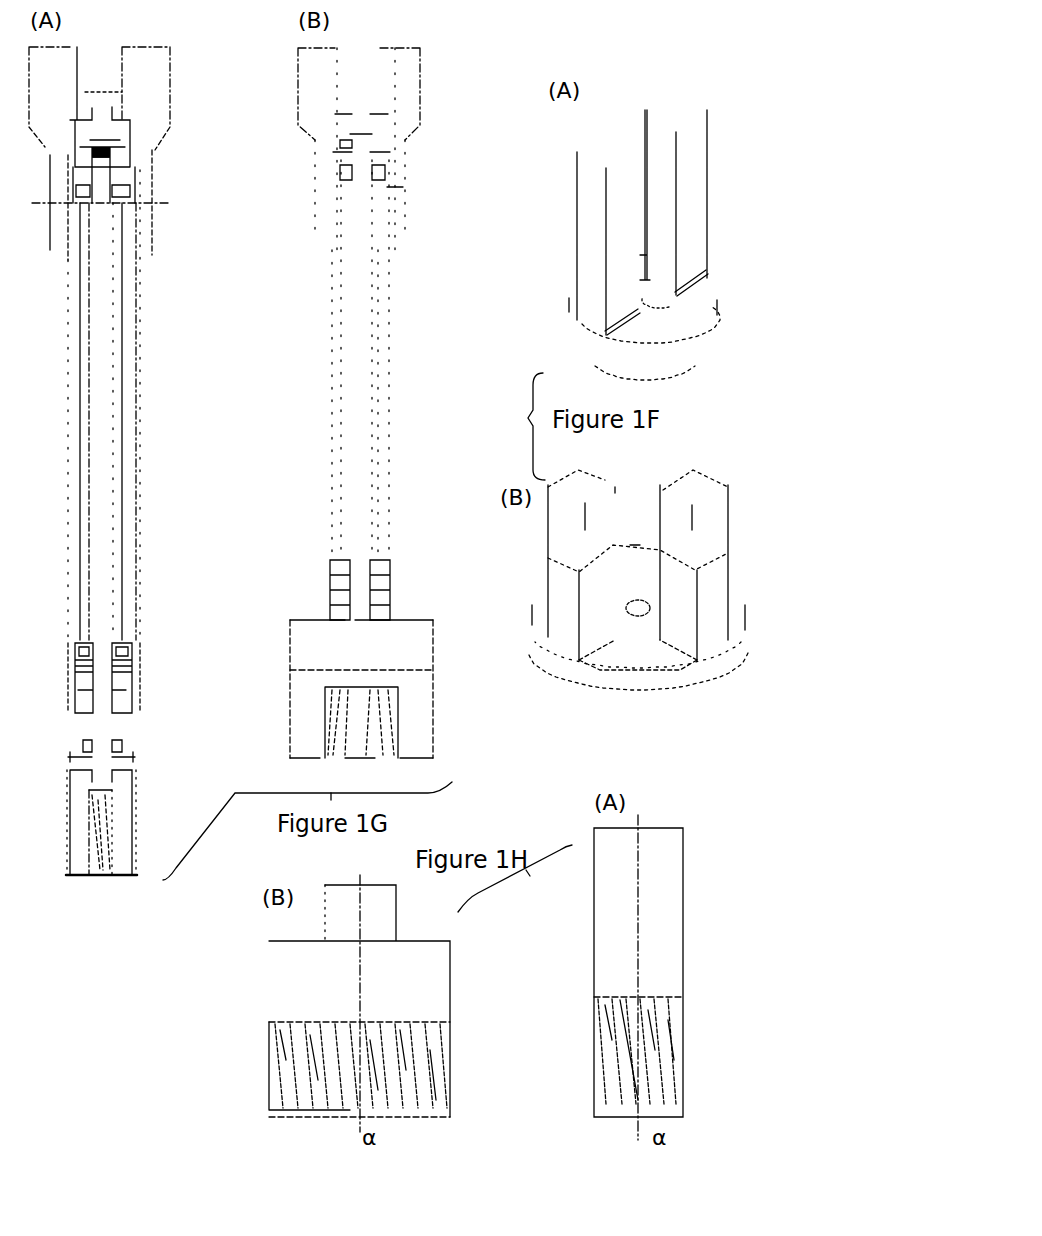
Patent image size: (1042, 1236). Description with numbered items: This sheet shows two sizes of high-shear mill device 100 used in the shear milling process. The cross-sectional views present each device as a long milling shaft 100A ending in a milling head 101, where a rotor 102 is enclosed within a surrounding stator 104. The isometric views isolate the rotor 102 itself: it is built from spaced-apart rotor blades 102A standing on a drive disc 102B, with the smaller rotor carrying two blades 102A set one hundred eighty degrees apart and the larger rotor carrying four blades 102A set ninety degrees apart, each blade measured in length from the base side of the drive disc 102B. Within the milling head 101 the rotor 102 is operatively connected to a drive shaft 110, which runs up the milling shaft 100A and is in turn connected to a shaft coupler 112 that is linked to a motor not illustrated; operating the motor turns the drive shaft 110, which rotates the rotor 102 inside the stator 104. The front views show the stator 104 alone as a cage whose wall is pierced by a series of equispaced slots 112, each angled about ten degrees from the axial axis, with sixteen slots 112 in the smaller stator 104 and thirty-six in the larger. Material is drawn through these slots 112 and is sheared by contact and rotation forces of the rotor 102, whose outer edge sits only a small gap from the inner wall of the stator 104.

In FIG. 1G, the high-shear mill device 100 is at (162, 298).
In FIG. 1G, the milling shaft 100A is at (145, 489).
In FIG. 1G, the milling head 101 is at (88, 888).
In FIG. 1G, the rotor 102 is at (120, 877).
In FIG. 1F, the rotor 102 is at (566, 338).
In FIG. 1G, the rotor blades 102A is at (122, 830).
In FIG. 1F, the rotor blades 102A is at (658, 140).
In FIG. 1G, the drive disc 102B is at (124, 781).
In FIG. 1F, the drive disc 102B is at (682, 356).
In FIG. 1H, the stator 104 is at (262, 992).
In FIG. 1G, the drive shaft 110 is at (102, 360).
In FIG. 1G, the slots 112 is at (110, 102).
In FIG. 1H, the slots 112 is at (337, 1045).